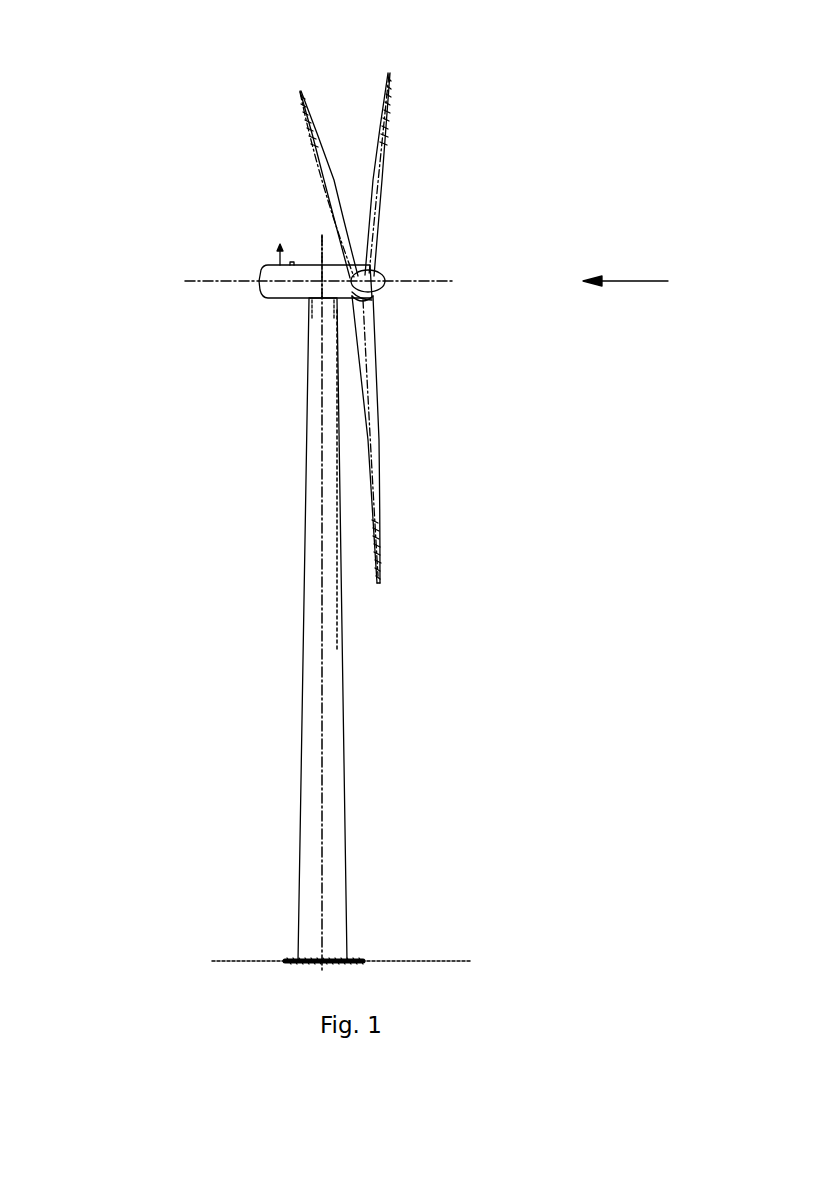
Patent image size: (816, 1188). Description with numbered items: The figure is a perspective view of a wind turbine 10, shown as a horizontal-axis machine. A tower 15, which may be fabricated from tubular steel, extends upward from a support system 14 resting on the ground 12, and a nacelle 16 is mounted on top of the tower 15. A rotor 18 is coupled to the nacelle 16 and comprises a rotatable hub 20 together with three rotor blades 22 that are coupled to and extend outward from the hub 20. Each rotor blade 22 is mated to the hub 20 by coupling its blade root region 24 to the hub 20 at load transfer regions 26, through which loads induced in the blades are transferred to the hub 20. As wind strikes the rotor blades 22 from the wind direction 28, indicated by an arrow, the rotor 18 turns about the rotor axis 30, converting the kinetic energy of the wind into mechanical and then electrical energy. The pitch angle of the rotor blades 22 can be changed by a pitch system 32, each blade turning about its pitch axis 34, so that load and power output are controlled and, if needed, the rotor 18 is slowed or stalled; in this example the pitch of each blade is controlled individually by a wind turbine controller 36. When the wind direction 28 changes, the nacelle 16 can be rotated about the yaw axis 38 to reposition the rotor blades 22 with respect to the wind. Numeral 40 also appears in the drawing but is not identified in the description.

The wind turbine 10 is at (116, 100).
The ground 12 is at (232, 960).
The support system 14 is at (290, 960).
The tower 15 is at (306, 604).
The nacelle 16 is at (280, 299).
The rotor 18 is at (393, 197).
The rotatable hub 20 is at (383, 276).
The rotor blade 22 is at (324, 158).
The blade root region 24 is at (377, 371).
The load transfer regions 26 is at (372, 300).
The wind direction 28 is at (648, 281).
The rotor axis 30 is at (440, 285).
The pitch system 32 is at (362, 326).
The pitch axes 34 is at (299, 92).
The wind turbine controller 36 is at (320, 314).
The yaw axis 38 is at (322, 668).
The yaw axis 40 is at (328, 258).